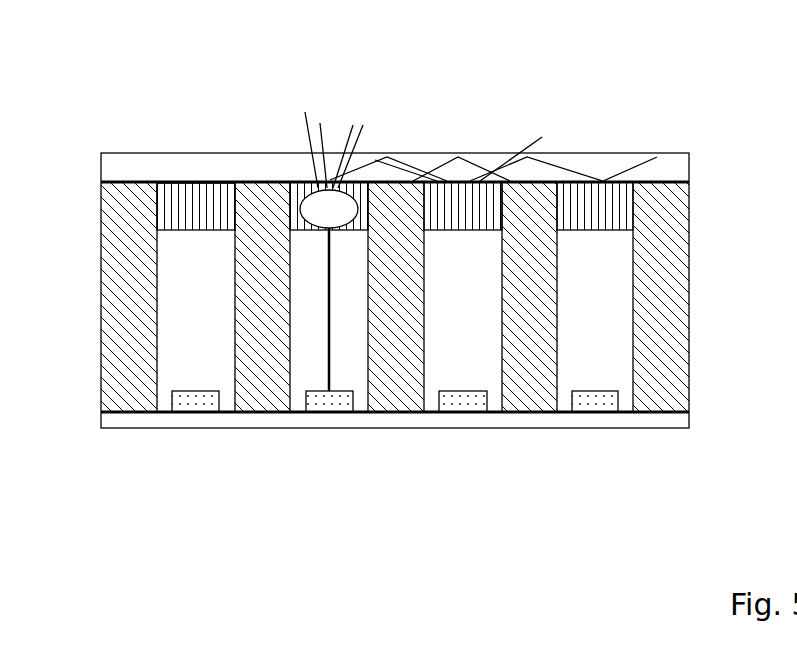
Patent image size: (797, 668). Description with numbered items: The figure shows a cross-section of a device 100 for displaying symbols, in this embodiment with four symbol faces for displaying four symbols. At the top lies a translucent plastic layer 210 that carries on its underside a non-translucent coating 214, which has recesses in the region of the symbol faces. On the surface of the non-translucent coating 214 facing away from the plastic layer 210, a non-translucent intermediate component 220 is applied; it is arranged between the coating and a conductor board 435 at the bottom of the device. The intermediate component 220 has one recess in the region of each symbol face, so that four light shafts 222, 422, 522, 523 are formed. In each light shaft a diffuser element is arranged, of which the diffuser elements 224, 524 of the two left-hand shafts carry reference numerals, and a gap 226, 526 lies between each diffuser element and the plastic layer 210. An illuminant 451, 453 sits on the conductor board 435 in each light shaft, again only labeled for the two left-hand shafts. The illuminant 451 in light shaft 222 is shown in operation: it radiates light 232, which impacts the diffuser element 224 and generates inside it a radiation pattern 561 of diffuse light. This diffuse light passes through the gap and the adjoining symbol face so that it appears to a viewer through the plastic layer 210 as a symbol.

The device 100 is at (85, 123).
The translucent plastic layer 210 is at (483, 162).
The non-translucent coating 214 is at (572, 181).
The non-translucent intermediate component 220 is at (260, 380).
The light shaft 222 is at (310, 350).
The diffuser element 224 is at (297, 187).
The gap 226 is at (307, 188).
The light 232 is at (330, 327).
The light shaft 422 is at (177, 357).
The conductor board 435 is at (450, 427).
The illuminant 451 is at (327, 403).
The illuminant 453 is at (193, 402).
The light shaft 522 is at (477, 352).
The light shaft 523 is at (607, 352).
The diffuser element 524 is at (215, 212).
The gap 526 is at (170, 183).
The radiation pattern 561 is at (363, 208).